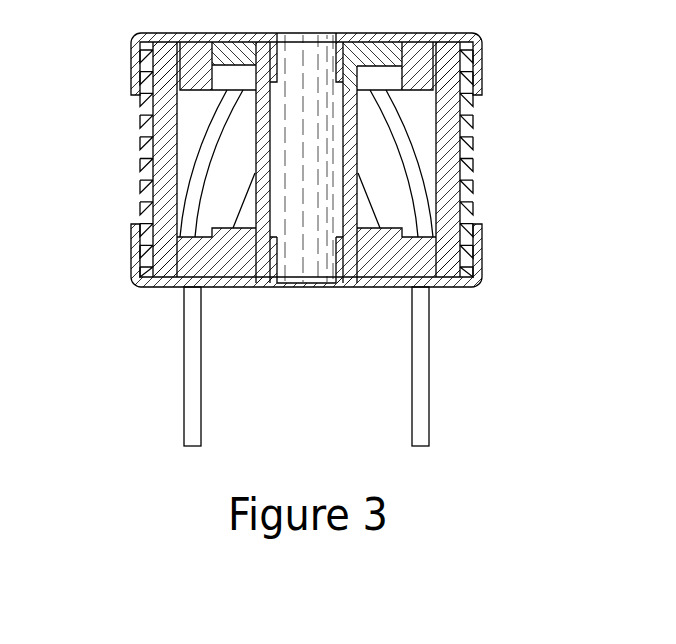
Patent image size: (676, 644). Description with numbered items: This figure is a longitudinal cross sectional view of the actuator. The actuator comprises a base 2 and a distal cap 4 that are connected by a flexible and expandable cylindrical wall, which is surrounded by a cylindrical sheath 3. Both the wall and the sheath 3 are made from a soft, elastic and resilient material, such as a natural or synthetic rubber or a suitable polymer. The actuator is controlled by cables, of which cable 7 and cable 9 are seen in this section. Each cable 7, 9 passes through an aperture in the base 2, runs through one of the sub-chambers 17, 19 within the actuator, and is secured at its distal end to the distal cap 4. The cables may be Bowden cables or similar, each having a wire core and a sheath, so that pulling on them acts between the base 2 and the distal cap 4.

The base 2 is at (482, 253).
The cylindrical sheath 3 is at (472, 148).
The distal cap 4 is at (482, 53).
The cable 7 is at (184, 352).
The cable 9 is at (429, 343).
The sub-chamber 17 is at (213, 170).
The sub-chamber 19 is at (405, 192).